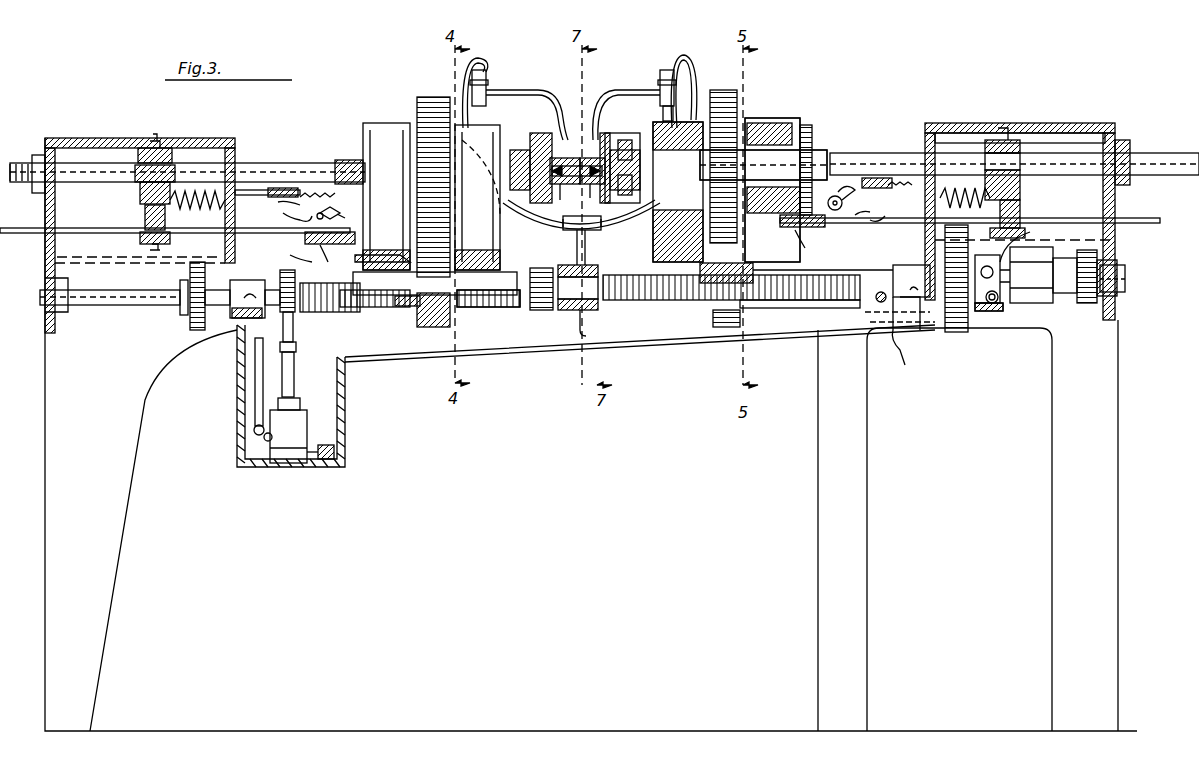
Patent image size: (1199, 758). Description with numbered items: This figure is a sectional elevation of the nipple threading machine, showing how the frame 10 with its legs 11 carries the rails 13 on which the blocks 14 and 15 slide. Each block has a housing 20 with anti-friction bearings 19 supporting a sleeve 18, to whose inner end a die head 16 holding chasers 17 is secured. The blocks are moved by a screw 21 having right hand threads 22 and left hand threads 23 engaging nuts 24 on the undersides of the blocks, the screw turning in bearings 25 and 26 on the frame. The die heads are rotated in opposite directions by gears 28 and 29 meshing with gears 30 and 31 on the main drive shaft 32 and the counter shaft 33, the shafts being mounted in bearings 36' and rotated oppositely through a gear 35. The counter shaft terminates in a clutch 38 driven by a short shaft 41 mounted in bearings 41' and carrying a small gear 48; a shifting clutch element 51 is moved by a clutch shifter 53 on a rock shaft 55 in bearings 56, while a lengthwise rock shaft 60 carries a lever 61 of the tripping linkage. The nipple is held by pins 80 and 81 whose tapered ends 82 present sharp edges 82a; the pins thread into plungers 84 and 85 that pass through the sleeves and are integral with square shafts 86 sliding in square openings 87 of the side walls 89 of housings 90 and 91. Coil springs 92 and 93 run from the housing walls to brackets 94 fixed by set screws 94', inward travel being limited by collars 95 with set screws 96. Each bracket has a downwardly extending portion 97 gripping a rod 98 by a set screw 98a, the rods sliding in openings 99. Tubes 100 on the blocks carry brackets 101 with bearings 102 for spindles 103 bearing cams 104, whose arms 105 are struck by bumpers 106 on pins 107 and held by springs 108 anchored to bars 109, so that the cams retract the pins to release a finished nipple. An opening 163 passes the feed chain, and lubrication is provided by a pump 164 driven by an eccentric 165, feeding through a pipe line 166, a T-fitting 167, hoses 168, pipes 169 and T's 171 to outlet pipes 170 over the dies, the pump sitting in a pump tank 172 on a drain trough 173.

The frame 10 is at (60, 401).
The legs 11 is at (112, 553).
The rails 13 is at (290, 248).
The block 14 is at (352, 128).
The block 15 is at (788, 114).
The die head 16 is at (542, 134).
The chasers 17 is at (610, 135).
The sleeve 18 is at (500, 200).
The anti-friction bearings 19 is at (693, 120).
The housing 20 is at (386, 133).
The screw 21 is at (505, 307).
The right hand threads 22 is at (280, 296).
The left hand threads 23 is at (652, 298).
The nuts 24 is at (622, 311).
The bearing 25 is at (590, 310).
The bearing 26 is at (240, 318).
The gear 28 is at (430, 97).
The gear 29 is at (737, 95).
The gear 30 is at (440, 327).
The gear 31 is at (740, 332).
The main drive shaft 32 is at (375, 255).
The counter shaft 33 is at (868, 280).
The gear 35 is at (955, 332).
The bearings 36' is at (910, 336).
The clutch 38 is at (1035, 303).
The short shaft 41 is at (1126, 278).
The bearings 41' is at (1127, 283).
The small gear 48 is at (1087, 303).
The shifting clutch element 51 is at (986, 255).
The clutch shifter 53 is at (996, 265).
The rock shaft 55 is at (990, 311).
The bearings 56 is at (985, 311).
The rock shaft 60 is at (873, 299).
The lever 61 is at (872, 318).
The pin 80 is at (576, 160).
The pin 81 is at (592, 160).
The tapered ends 82 is at (563, 194).
The sharp edges 82a is at (596, 197).
The plunger 84 is at (348, 160).
The plunger 85 is at (815, 168).
The square shaft 86 is at (205, 172).
The square openings 87 is at (58, 176).
The side walls 89 is at (230, 168).
The housing 90 is at (75, 140).
The housing 91 is at (962, 165).
The retractible coil spring 92 is at (205, 205).
The retractible coil spring 93 is at (985, 172).
The bracket 94 is at (595, 151).
The set screws 94' is at (596, 125).
The collar 95 is at (40, 158).
The set screws 96 is at (1138, 188).
The downwardly extending portion 97 is at (145, 214).
The rod 98 is at (1135, 220).
The set screws 98a is at (985, 232).
The openings 99 is at (1115, 233).
The tube 100 is at (568, 224).
The bracket 101 is at (325, 255).
The bearing 102 is at (833, 201).
The spindle 103 is at (853, 186).
The cam 104 is at (343, 209).
The arm 105 is at (316, 194).
The bumper 106 is at (283, 188).
The pin 107 is at (960, 170).
The retractile spring 108 is at (870, 232).
The bar 109 is at (283, 220).
The opening 163 is at (548, 310).
The pump 164 is at (287, 455).
The eccentric 165 is at (285, 312).
The pipe line 166 is at (255, 425).
The T-fitting 167 is at (579, 232).
The flexible hose 168 is at (612, 216).
The pipe 169 is at (665, 110).
The outlet pipe 170 is at (530, 88).
The T 171 is at (668, 74).
The pump tank 172 is at (345, 452).
The drain trough 173 is at (360, 360).